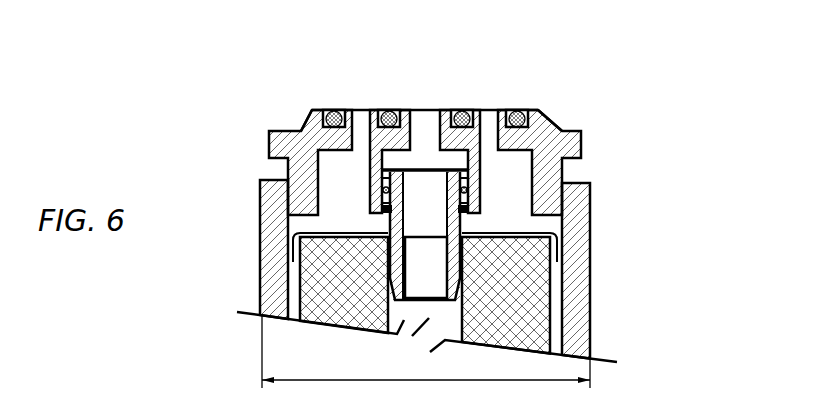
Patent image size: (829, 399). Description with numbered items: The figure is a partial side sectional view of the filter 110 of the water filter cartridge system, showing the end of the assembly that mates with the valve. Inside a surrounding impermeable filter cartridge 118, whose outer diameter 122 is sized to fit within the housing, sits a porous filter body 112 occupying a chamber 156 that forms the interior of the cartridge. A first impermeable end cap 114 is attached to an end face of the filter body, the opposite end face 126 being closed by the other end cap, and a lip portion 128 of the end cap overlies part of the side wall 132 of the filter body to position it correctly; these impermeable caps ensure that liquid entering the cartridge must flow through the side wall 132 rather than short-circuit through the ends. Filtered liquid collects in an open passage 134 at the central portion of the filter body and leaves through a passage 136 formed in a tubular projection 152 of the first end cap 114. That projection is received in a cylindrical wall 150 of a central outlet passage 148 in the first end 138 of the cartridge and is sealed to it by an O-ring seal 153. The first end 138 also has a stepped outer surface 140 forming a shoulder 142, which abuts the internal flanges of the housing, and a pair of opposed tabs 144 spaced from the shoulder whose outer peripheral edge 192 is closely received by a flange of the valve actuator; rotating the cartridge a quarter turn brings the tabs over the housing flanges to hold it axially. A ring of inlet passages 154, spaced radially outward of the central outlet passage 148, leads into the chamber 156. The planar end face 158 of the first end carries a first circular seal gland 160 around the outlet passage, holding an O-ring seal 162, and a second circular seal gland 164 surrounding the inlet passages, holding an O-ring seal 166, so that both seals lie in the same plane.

The filter 110 is at (620, 268).
The porous filter body 112 is at (300, 323).
The first impermeable end cap 114 is at (288, 220).
The filter cartridge 118 is at (262, 292).
The outer diameter 122 is at (312, 379).
The end face 126 is at (350, 236).
The lip portion 128 is at (290, 247).
The side wall 132 is at (298, 290).
The open passage 134 is at (403, 330).
The passage 136 is at (427, 268).
The first end 138 is at (556, 118).
The stepped outer surface 140 is at (563, 131).
The shoulder 142 is at (572, 183).
The tabs 144 is at (583, 147).
The central outlet passage 148 is at (433, 123).
The cylindrical wall 150 is at (300, 188).
The tubular projection 152 is at (438, 168).
The O-ring seal 153 is at (563, 163).
The inlet passages 154 is at (356, 118).
The chamber 156 is at (300, 127).
The end face 158 is at (518, 106).
The first circular seal gland 160 is at (363, 106).
The O-ring seal 162 is at (380, 106).
The second circular seal gland 164 is at (545, 118).
The O-ring seal 166 is at (528, 112).
The outer peripheral edge 192 is at (297, 160).